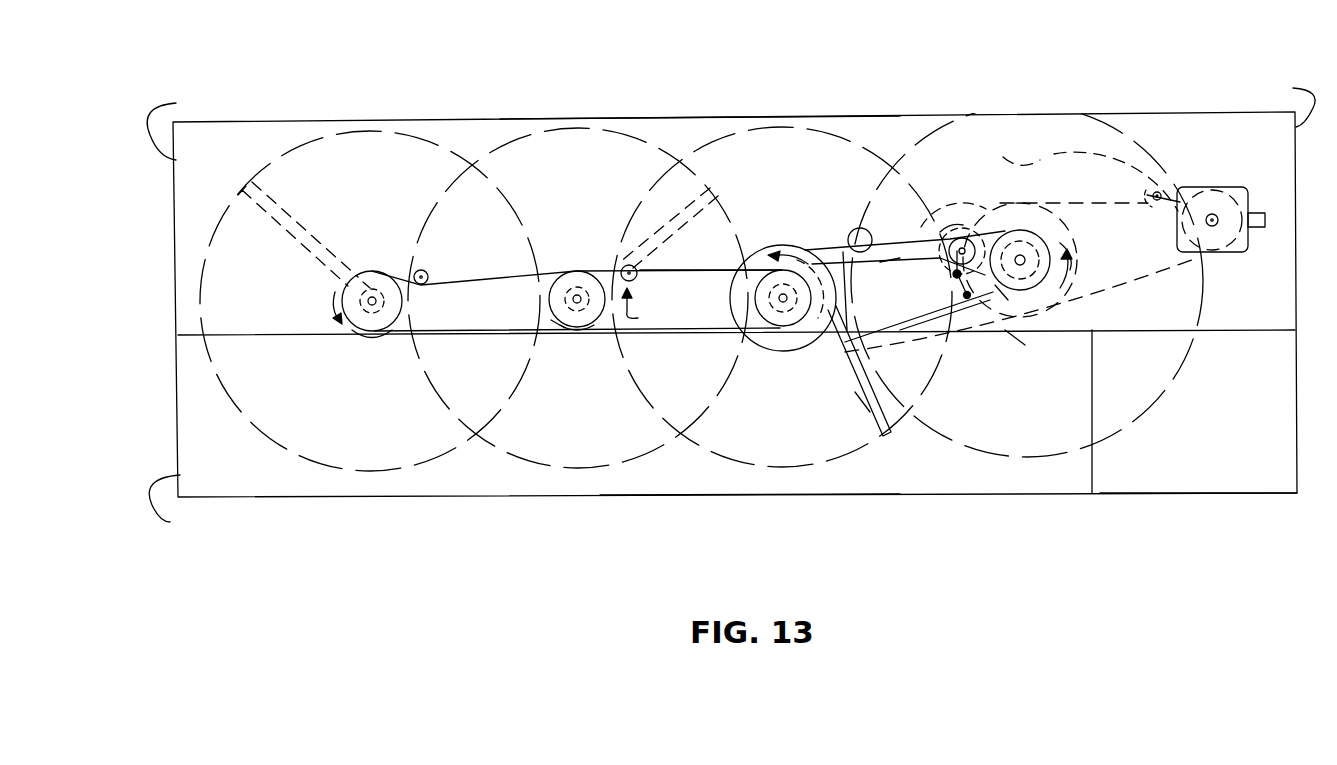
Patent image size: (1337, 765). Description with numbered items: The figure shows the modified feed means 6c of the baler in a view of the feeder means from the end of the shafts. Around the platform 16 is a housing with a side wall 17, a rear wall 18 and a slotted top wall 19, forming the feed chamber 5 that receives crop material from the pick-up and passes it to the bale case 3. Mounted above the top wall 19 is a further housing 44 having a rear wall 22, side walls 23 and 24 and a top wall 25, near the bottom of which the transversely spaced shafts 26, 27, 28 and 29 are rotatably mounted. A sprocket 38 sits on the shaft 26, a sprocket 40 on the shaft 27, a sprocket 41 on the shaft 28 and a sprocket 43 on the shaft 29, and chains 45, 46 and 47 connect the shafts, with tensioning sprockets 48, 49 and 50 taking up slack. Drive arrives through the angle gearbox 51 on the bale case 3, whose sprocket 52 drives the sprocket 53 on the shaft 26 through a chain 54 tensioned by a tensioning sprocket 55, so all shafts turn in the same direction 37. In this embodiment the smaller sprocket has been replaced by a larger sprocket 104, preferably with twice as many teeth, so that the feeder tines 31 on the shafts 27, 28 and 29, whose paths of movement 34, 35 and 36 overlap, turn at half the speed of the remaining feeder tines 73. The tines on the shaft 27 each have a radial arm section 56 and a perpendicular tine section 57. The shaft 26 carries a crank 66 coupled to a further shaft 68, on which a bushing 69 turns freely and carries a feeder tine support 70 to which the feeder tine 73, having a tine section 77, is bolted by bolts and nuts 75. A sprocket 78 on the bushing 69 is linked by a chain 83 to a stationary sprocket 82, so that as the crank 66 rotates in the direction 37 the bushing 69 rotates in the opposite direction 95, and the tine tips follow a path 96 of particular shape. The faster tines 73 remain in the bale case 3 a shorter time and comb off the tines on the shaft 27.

The bale case 3 is at (1255, 494).
The feed chamber 5 is at (576, 499).
The modified feed means 6c is at (428, 422).
The platform 16 is at (783, 495).
The side wall 17 is at (170, 503).
The rear wall 18 is at (580, 428).
The slotted top wall 19 is at (583, 330).
The rear wall 22 is at (789, 177).
The side wall 23 is at (174, 121).
The side wall 24 is at (1288, 103).
The top wall 25 is at (688, 114).
The shaft 26 is at (1020, 260).
The shaft 27 is at (778, 307).
The shaft 28 is at (577, 298).
The shaft 29 is at (375, 299).
The feeder tine 31 is at (296, 240).
The path of movement 34 is at (862, 148).
The path of movement 35 is at (648, 148).
The path of movement 36 is at (438, 147).
The direction of rotation 37 is at (1091, 263).
The sprocket 38 is at (1032, 233).
The sprocket 40 is at (737, 347).
The sprocket 41 is at (553, 330).
The sprocket 43 is at (364, 335).
The housing 44 is at (358, 113).
The chain 45 is at (930, 247).
The chain 46 is at (694, 272).
The chain 47 is at (522, 278).
The tensioning sprocket 48 is at (856, 228).
The tensioning sprocket 49 is at (627, 265).
The tensioning sprocket 50 is at (423, 269).
The angle gearbox 51 is at (1228, 187).
The sprocket 52 is at (1235, 252).
The sprocket 53 is at (1077, 245).
The chain 54 is at (1120, 284).
The tensioning sprocket 55 is at (1152, 190).
The arm section 56 is at (800, 310).
The tine section 57 is at (884, 410).
The crank 66 is at (1020, 292).
The further shaft 68 is at (895, 260).
The bushing 69 is at (925, 240).
The feeder tine support 70 is at (960, 236).
The feeder tine 73 is at (878, 343).
The bolts and nuts 75 is at (957, 275).
The tine section 77 is at (916, 333).
The sprocket 78 is at (947, 277).
The sprocket 82 is at (1043, 230).
The chain 83 is at (997, 232).
The opposite direction 95 is at (1002, 288).
The path 96 is at (1172, 388).
The larger sprocket 104 is at (770, 335).